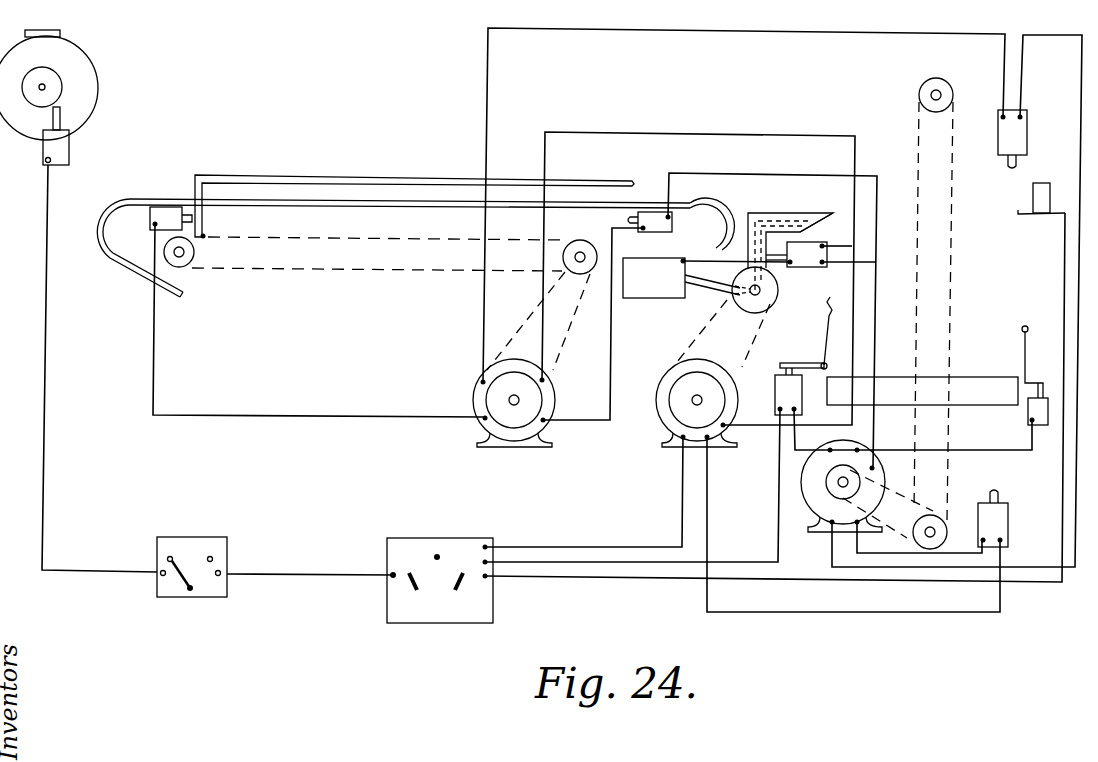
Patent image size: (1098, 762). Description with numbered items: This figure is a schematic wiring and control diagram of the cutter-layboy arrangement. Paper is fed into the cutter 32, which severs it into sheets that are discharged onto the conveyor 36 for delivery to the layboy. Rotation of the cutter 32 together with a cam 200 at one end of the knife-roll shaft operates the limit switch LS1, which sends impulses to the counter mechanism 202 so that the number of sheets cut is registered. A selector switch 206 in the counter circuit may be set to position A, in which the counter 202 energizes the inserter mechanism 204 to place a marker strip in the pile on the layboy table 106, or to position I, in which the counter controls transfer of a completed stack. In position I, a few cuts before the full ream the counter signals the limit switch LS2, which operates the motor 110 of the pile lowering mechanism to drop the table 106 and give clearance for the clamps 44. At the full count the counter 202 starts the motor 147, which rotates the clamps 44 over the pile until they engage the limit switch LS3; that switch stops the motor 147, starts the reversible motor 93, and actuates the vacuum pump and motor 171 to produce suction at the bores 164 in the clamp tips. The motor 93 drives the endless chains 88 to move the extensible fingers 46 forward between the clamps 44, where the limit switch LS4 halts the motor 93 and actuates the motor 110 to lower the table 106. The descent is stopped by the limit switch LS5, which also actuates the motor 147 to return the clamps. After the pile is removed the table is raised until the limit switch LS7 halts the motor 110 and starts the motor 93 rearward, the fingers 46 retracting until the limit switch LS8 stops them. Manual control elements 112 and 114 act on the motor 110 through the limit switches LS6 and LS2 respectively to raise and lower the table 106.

The cutter 32 is at (92, 67).
The cam 200 is at (42, 68).
The limit switch LS-1 LS1 is at (43, 158).
The limit switch LS-8 LS8 is at (163, 208).
The extensible fingers 46 is at (348, 176).
The conveyor 36 is at (373, 207).
The endless link-chain devices 88 is at (357, 272).
The clamps 44 is at (783, 213).
The bore 164 is at (818, 213).
The limit switch LS-4 LS4 is at (643, 232).
The limit switch LS-3 LS3 is at (796, 254).
The vacuum pump and motor 171 is at (638, 299).
The control element 114 is at (825, 340).
The limit switch LS-2 LS2 is at (775, 395).
The layboy table 106 is at (1000, 402).
The control element 112 is at (1027, 360).
The limit switch LS-6 LS6 is at (1050, 427).
The reversible motor 93 is at (515, 448).
The motor 147 is at (722, 448).
The motor 110 is at (815, 516).
The limit switch LS-5 LS5 is at (1013, 530).
The limit switch LS-7 LS7 is at (1027, 138).
The inserter mechanism 204 is at (1052, 177).
The selector switch 206 is at (192, 537).
The counter mechanism 202 is at (443, 530).